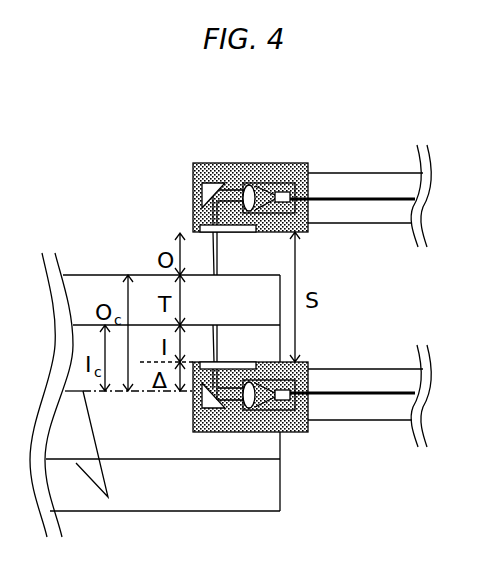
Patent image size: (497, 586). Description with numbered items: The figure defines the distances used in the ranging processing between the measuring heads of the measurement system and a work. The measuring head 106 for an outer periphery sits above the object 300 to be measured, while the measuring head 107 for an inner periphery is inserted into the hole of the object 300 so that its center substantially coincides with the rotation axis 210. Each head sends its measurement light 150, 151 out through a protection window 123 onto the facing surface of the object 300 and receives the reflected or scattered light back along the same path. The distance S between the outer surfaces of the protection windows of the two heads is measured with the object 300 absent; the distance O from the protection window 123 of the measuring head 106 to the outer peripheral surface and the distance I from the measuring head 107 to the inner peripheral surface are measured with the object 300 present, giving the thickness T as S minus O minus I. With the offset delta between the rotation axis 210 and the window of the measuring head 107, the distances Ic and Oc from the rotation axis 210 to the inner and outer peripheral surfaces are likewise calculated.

The measuring head for an outer periphery 106 is at (198, 162).
The measuring head for an inner periphery 107 is at (292, 432).
The protection window 123 is at (200, 228).
The measurement light 150 is at (218, 257).
The measurement light 151 is at (218, 345).
The object to be measured 300 is at (108, 275).
The rotation axis 210 is at (76, 463).